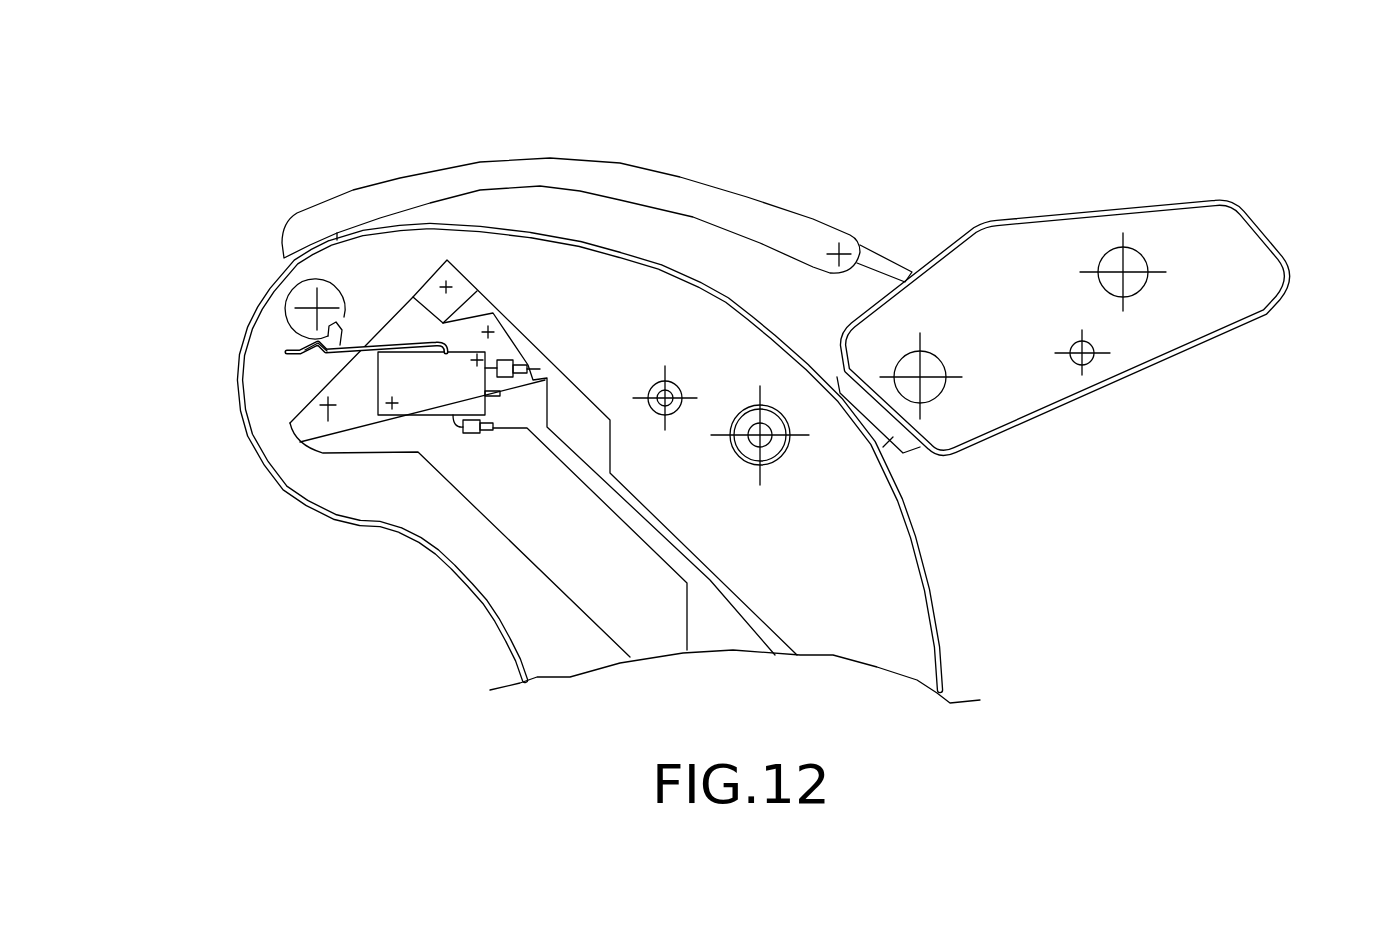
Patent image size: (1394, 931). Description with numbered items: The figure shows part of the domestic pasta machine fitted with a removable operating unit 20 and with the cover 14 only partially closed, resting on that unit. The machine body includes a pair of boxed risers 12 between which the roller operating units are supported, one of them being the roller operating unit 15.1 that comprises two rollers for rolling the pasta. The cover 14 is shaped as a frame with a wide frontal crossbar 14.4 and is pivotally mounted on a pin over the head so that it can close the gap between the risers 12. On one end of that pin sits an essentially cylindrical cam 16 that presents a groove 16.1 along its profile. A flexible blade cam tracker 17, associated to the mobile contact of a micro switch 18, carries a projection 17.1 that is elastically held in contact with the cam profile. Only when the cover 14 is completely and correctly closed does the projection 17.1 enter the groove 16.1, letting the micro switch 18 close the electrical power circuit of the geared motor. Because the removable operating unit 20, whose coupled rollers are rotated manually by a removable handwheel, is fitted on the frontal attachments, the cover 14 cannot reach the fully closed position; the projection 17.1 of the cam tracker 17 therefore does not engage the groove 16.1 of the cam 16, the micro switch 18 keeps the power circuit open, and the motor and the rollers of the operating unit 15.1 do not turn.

The boxed riser 12 is at (883, 617).
The cover 14 is at (813, 192).
The frontal crossbar 14.4 is at (897, 262).
The roller operating unit 15.1 is at (675, 420).
The cam 16 is at (290, 315).
The groove 16.1 is at (340, 322).
The cam tracker 17 is at (333, 345).
The projection 17.1 is at (323, 348).
The micro switch 18 is at (459, 379).
The removable operating unit 20 is at (1277, 233).